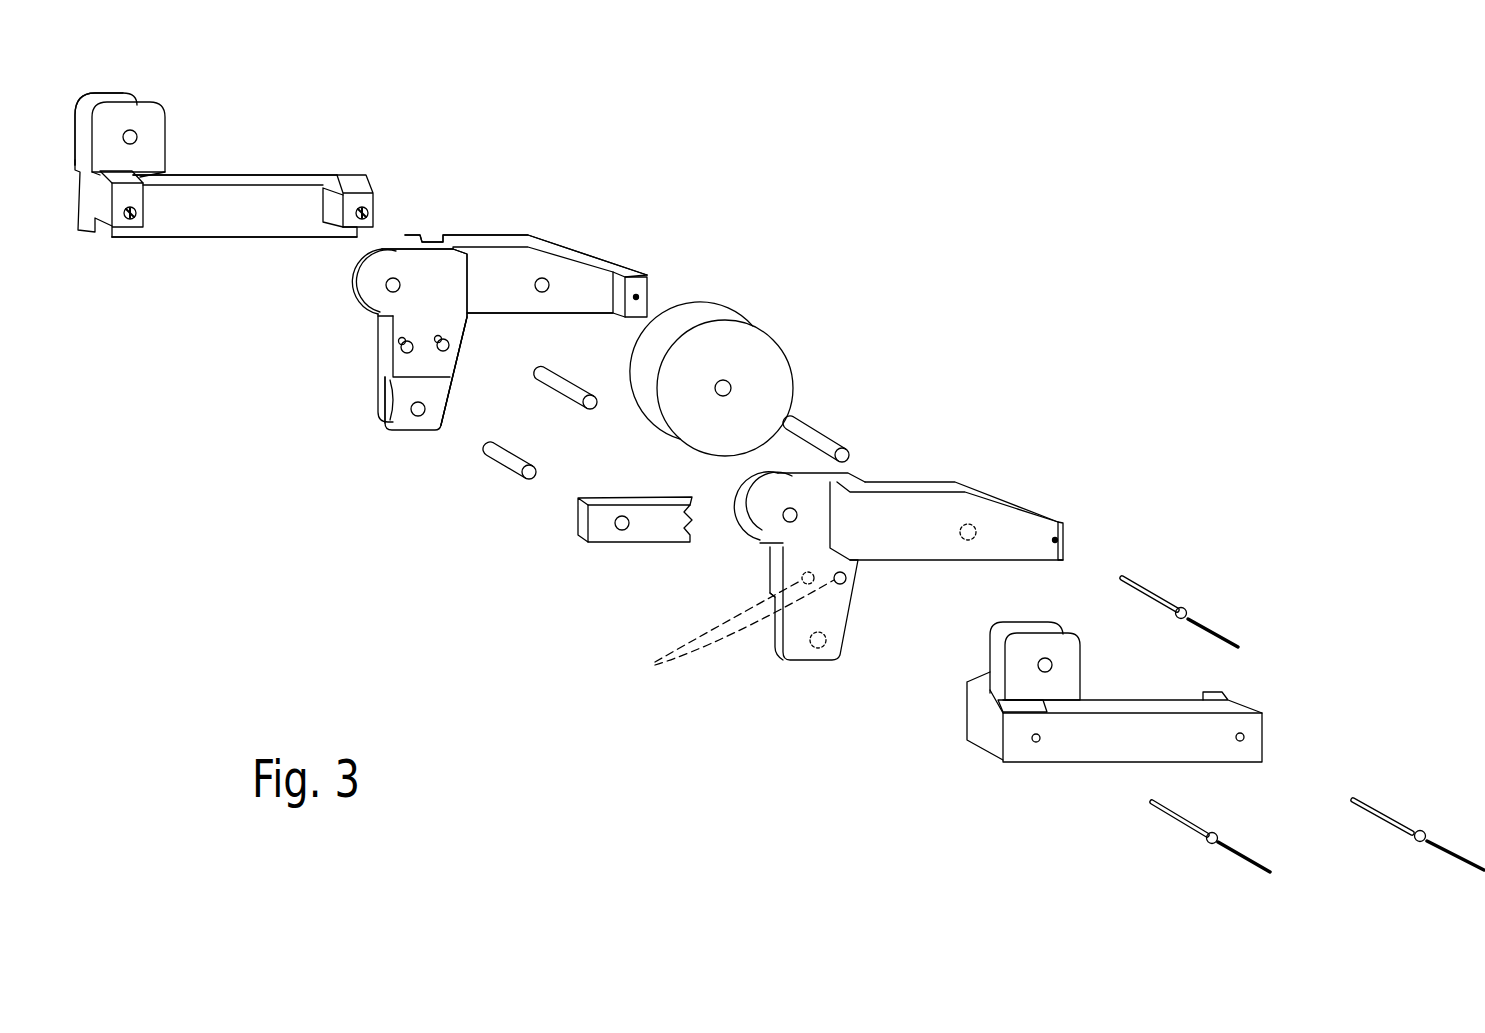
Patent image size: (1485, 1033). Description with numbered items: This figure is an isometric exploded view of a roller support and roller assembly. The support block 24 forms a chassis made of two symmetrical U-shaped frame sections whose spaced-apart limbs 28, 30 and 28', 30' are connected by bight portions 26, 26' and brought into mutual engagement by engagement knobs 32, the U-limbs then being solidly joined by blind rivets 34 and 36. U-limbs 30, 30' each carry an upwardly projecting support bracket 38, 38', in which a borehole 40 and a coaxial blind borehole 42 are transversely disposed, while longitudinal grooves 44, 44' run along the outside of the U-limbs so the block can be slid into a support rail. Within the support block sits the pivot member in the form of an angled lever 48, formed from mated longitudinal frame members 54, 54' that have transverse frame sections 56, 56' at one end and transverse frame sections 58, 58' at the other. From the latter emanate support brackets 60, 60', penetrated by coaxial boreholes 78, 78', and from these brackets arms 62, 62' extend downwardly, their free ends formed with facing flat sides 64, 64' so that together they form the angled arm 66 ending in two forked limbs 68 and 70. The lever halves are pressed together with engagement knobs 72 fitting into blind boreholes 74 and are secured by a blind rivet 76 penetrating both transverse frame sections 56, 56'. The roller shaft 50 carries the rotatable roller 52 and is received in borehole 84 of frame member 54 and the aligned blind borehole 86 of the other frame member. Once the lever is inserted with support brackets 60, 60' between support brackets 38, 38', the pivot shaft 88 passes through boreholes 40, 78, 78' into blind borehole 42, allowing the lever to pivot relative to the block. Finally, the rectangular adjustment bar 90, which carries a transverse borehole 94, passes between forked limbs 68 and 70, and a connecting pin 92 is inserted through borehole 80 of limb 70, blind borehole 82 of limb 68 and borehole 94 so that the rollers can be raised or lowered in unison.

The support block 24 is at (263, 161).
The bight portion 26 is at (234, 143).
The U-limb 28 is at (384, 161).
The U-limb 30 is at (121, 283).
The engagement knob 32 is at (133, 220).
The blind rivet 34 is at (1375, 800).
The blind rivet 36 is at (1184, 815).
The support bracket 38 is at (120, 103).
The borehole 40 is at (140, 129).
The blind borehole 42 is at (1052, 668).
The longitudinal groove 44 is at (88, 247).
The angled lever 48 is at (534, 233).
The roller shaft 50 is at (816, 418).
The roller 52 is at (703, 342).
The longitudinal frame member 54 is at (526, 223).
The transverse frame section 56 is at (690, 234).
The transverse frame section 58 is at (438, 279).
The support bracket 60 is at (319, 281).
The arm 62 is at (339, 365).
The flat side 64 is at (347, 474).
The angled arm 66 is at (457, 362).
The forked limb 68 is at (436, 371).
The forked limb 70 is at (803, 634).
The engagement knob 72 is at (433, 350).
The blind borehole 74 is at (728, 630).
The blind rivet 76 is at (1160, 600).
The borehole 78 is at (336, 319).
The borehole 80 is at (412, 418).
The blind borehole 82 is at (827, 644).
The borehole 84 is at (550, 287).
The blind borehole 86 is at (970, 524).
The pivot shaft 88 is at (567, 398).
The adjustment bar 90 is at (665, 542).
The connecting pin 92 is at (503, 463).
The borehole 94 is at (620, 532).
The bight portion 26' is at (1132, 699).
The U-limb 28' is at (1280, 662).
The U-limb 30' is at (965, 725).
The support bracket 38' is at (1049, 630).
The longitudinal groove 44' is at (949, 744).
The longitudinal frame member 54' is at (950, 445).
The transverse frame section 56' is at (1083, 477).
The transverse frame section 58' is at (871, 491).
The support bracket 60' is at (749, 528).
The arm 62' is at (825, 668).
The flat side 64' is at (729, 667).
The borehole 78' is at (725, 484).